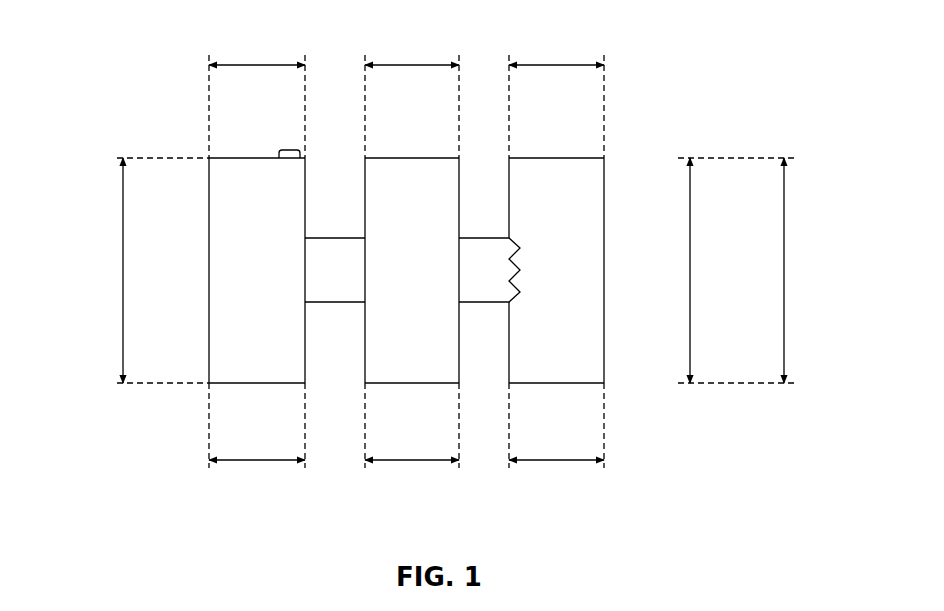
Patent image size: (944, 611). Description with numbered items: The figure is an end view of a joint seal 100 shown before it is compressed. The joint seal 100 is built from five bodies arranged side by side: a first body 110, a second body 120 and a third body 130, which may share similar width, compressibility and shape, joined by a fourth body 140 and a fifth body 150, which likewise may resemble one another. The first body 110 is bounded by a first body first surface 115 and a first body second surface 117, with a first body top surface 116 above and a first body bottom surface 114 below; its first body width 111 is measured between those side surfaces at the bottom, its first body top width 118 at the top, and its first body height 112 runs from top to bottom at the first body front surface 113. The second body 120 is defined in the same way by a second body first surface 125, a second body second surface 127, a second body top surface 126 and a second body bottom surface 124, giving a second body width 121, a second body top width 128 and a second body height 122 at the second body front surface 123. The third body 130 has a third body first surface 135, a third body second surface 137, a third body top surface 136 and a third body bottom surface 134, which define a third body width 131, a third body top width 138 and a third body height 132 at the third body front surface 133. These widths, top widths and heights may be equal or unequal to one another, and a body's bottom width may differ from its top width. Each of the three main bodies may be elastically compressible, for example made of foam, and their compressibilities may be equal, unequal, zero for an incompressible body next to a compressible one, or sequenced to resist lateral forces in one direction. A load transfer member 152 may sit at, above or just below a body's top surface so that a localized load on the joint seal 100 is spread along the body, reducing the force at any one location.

The joint seal 100 is at (140, 61).
The first body 110 is at (258, 170).
The first body width 111 is at (280, 462).
The first body height 112 is at (123, 273).
The first body front surface 113 is at (258, 256).
The first body bottom surface 114 is at (283, 383).
The first body first surface 115 is at (209, 360).
The first body top surface 116 is at (253, 158).
The first body second surface 117 is at (305, 210).
The first body top width 118 is at (280, 62).
The second body 120 is at (418, 170).
The second body width 121 is at (435, 462).
The second body height 122 is at (690, 273).
The second body front surface 123 is at (412, 257).
The second body bottom surface 124 is at (437, 383).
The second body first surface 125 is at (365, 362).
The second body top surface 126 is at (413, 158).
The second body second surface 127 is at (459, 210).
The second body top width 128 is at (435, 62).
The third body 130 is at (562, 170).
The third body width 131 is at (580, 461).
The third body height 132 is at (784, 273).
The third body front surface 133 is at (579, 256).
The third body bottom surface 134 is at (580, 383).
The third body first surface 135 is at (604, 360).
The third body top surface 136 is at (553, 158).
The third body second surface 137 is at (604, 208).
The third body top width 138 is at (580, 62).
The fourth body 140 is at (310, 302).
The fifth body 150 is at (503, 290).
The load transfer member 152 is at (292, 150).